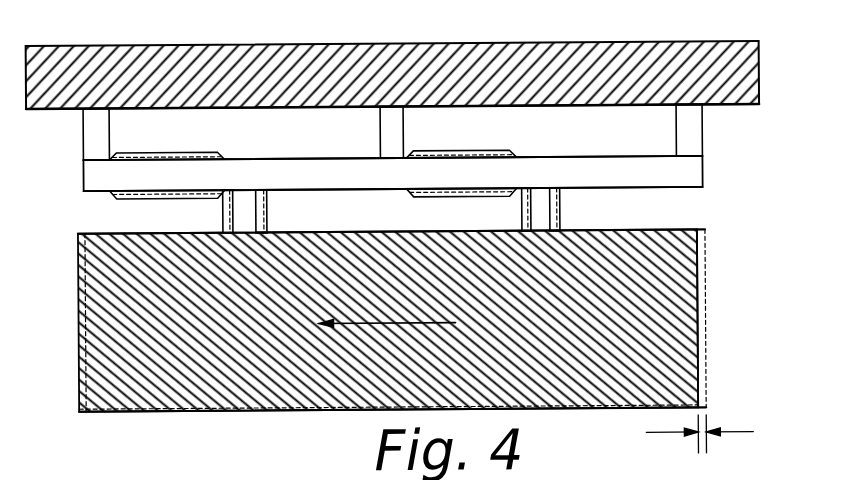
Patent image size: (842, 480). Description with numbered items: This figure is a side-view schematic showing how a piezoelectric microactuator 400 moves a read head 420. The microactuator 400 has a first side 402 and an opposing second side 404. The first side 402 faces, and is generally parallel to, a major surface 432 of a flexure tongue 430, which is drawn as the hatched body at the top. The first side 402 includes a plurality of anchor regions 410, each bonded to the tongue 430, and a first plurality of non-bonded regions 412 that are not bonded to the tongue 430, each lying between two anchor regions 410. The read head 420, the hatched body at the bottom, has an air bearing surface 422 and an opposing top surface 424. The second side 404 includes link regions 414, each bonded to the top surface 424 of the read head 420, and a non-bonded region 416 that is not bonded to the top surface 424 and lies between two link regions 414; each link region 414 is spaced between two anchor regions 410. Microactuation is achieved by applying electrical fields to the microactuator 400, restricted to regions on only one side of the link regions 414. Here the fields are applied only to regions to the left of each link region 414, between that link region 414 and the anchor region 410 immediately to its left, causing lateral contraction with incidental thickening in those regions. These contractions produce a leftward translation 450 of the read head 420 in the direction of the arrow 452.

The piezoelectric microactuator 400 is at (704, 171).
The first side 402 is at (613, 158).
The second side 404 is at (652, 190).
The anchor regions 410 is at (103, 129).
The first plurality of non-bonded regions 412 is at (293, 158).
The link regions 414 is at (247, 211).
The non-bonded region 416 is at (338, 192).
The read head 420 is at (693, 321).
The air bearing surface 422 is at (603, 411).
The top surface 424 is at (112, 231).
The flexure tongue 430 is at (762, 70).
The major surface 432 is at (42, 110).
The leftward translation 450 is at (743, 436).
The arrow 452 is at (388, 323).